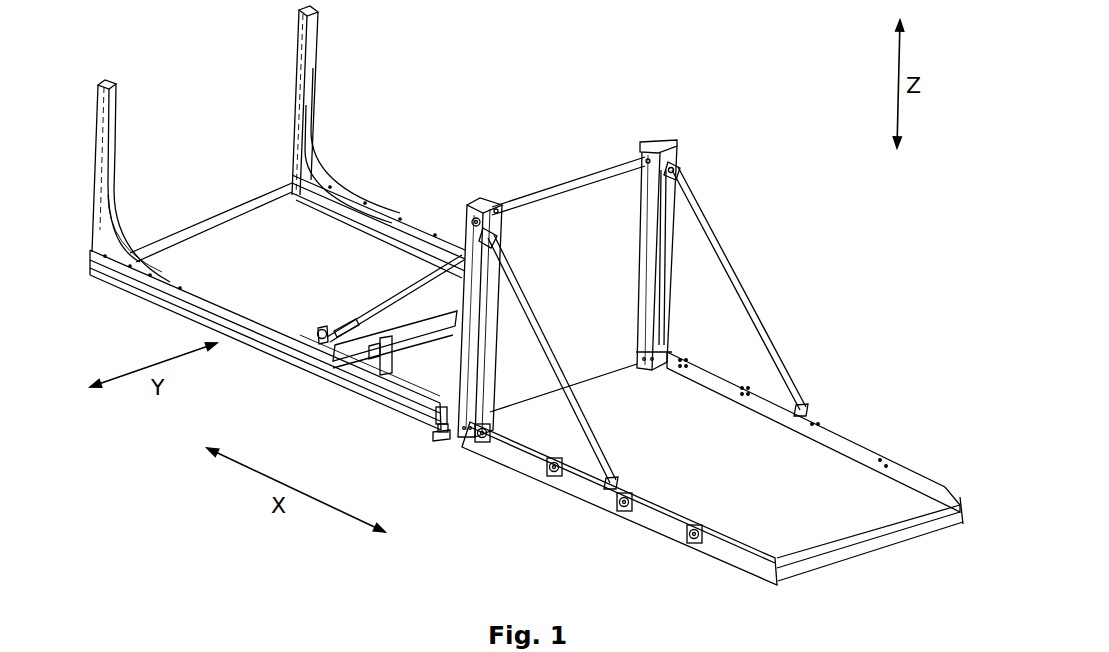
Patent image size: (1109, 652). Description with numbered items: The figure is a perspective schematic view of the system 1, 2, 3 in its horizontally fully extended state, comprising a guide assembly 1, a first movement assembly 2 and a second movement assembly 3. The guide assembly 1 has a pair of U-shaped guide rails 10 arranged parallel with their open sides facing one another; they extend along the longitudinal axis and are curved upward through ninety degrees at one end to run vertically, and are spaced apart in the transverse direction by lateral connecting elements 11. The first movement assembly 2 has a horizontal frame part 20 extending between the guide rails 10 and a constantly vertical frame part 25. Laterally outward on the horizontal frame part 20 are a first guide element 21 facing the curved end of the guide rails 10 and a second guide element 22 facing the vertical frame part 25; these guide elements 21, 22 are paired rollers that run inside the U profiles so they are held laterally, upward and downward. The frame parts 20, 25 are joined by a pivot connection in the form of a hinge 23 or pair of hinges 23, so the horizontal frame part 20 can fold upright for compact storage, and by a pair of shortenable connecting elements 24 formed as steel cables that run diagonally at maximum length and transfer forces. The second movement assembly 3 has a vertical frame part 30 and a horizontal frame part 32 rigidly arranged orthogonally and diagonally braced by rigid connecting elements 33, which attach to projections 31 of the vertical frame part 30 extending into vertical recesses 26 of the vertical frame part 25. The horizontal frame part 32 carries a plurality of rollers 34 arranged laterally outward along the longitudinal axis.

The guide assembly 1 is at (242, 118).
The guide rails 10 is at (115, 113).
The lateral connecting elements 11 is at (203, 223).
The first movement assembly 2 is at (546, 100).
The horizontal frame part 20 is at (317, 333).
The first guide element 21 is at (310, 333).
The second guide element 22 is at (438, 440).
The hinge 23 is at (441, 432).
The shortenable connecting elements 24 is at (410, 286).
The vertical frame part 25 is at (490, 203).
The vertical recesses 26 is at (664, 283).
The second movement assembly 3 is at (898, 282).
The vertical frame part 30 is at (476, 444).
The projections 31 is at (675, 168).
The horizontal frame part 32 is at (847, 447).
The connecting elements 33 is at (724, 257).
The rollers 34 is at (558, 474).